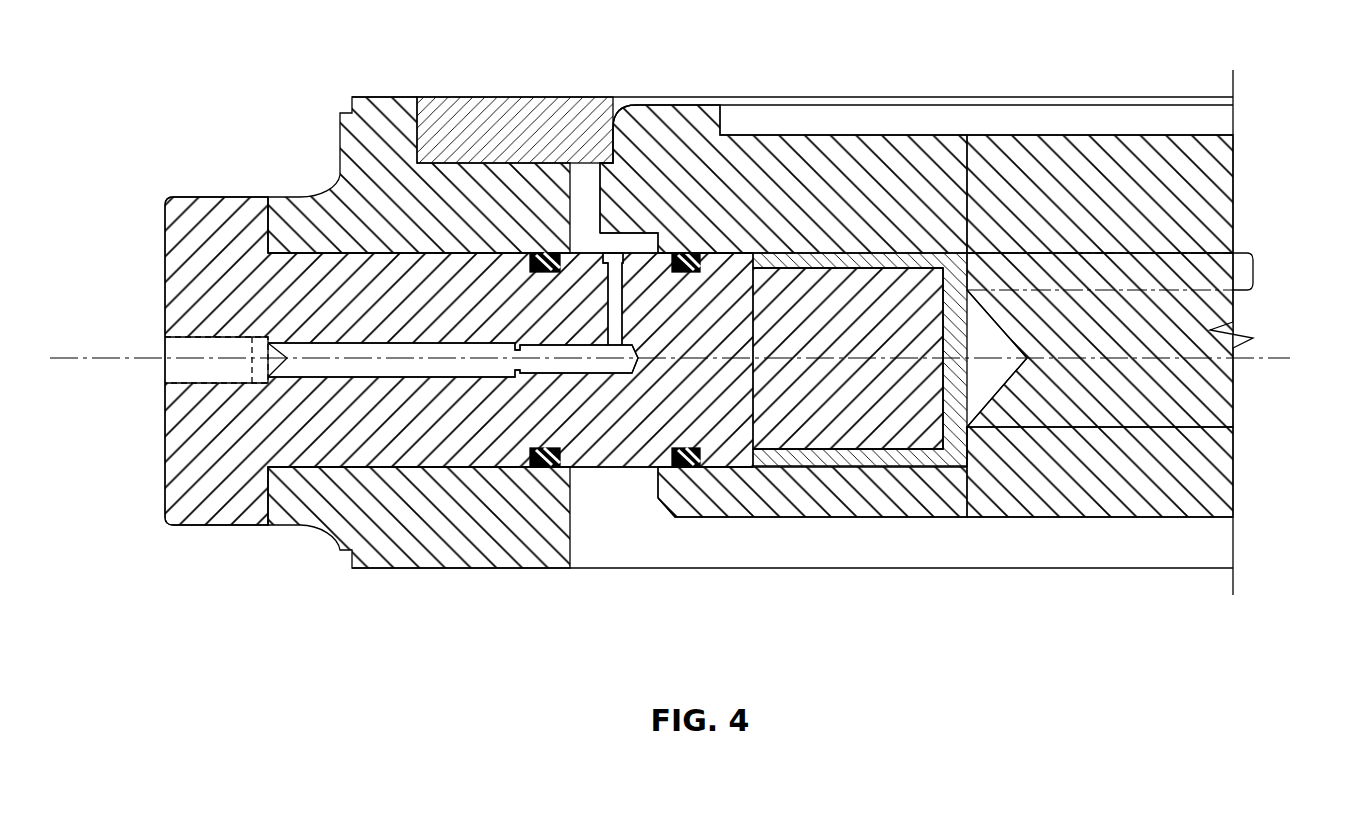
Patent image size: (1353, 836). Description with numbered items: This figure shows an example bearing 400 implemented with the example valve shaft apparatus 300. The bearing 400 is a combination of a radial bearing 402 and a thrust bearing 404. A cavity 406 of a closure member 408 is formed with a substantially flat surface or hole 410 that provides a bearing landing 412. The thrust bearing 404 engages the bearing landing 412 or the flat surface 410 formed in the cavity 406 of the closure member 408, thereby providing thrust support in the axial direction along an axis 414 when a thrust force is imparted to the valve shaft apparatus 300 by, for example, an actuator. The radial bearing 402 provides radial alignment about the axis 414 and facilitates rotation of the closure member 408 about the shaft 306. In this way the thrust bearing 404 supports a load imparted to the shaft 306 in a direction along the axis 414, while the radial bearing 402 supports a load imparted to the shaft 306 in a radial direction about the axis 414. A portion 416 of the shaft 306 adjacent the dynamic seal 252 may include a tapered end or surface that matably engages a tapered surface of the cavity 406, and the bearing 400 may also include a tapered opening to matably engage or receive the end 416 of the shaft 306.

The valve shaft apparatus 300 is at (221, 183).
The shaft 306 is at (368, 258).
The dynamic seal 252 is at (688, 252).
The bearing 400 is at (1033, 223).
The radial bearing 402 is at (843, 253).
The thrust bearing 404 is at (968, 447).
The cavity 406 is at (1005, 373).
The closure member 408 is at (877, 516).
The flat surface 410 is at (968, 433).
The bearing landing 412 is at (1257, 272).
The axis 414 is at (877, 360).
The portion of the shaft 416 is at (888, 293).